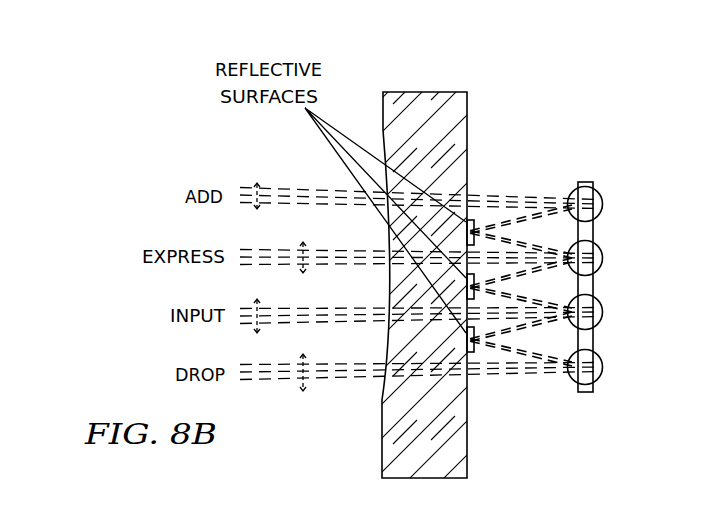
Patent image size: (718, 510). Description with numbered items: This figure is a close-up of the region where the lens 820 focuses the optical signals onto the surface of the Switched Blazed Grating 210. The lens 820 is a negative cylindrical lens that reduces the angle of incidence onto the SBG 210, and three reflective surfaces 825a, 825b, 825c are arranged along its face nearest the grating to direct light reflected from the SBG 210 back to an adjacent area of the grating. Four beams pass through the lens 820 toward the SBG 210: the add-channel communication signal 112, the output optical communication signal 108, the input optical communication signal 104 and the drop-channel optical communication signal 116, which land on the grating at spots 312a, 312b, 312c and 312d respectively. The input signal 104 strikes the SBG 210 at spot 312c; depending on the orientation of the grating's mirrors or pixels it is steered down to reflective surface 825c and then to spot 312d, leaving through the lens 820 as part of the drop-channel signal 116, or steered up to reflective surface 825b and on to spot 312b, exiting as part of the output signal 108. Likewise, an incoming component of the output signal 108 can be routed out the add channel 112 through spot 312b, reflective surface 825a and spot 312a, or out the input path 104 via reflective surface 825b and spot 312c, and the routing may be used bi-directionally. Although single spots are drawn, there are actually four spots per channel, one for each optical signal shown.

The input optical communication signal 104 is at (257, 299).
The output optical communication signal 108 is at (303, 241).
The add-channel communication signal 112 is at (257, 183).
The drop-channel optical communication signal 116 is at (303, 391).
The Switched Blazed Grating 210 is at (586, 181).
The spot 312a is at (603, 200).
The spot 312b is at (603, 255).
The spot 312c is at (603, 310).
The spot 312d is at (600, 376).
The second lens 820 is at (468, 427).
The reflective surface 825a is at (472, 220).
The reflective surface 825b is at (477, 276).
The reflective surface 825c is at (475, 352).